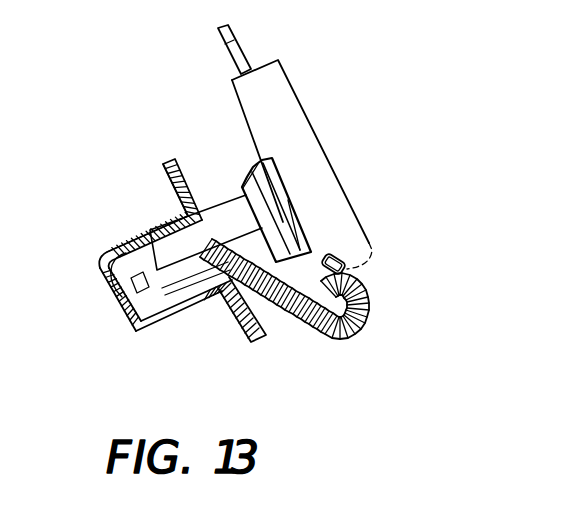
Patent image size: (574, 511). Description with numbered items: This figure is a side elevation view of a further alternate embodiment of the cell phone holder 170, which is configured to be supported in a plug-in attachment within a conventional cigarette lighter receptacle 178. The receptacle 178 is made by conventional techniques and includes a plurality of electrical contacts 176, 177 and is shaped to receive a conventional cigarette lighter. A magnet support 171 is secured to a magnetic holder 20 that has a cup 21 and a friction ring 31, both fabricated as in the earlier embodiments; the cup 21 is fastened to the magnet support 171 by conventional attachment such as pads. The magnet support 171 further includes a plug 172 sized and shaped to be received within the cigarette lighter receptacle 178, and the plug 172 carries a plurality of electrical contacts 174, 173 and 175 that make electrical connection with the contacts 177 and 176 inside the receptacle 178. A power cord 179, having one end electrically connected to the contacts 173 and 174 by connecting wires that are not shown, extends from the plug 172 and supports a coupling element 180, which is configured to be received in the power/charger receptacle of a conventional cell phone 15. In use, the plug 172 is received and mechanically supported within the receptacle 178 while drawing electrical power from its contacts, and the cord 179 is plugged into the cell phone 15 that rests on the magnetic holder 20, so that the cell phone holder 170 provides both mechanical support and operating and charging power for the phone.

The cell phone 15 is at (300, 93).
The magnetic holder 20 is at (236, 163).
The cup 21 is at (242, 188).
The friction ring 31 is at (287, 198).
The cell phone holder 170 is at (187, 160).
The magnet support 171 is at (215, 190).
The plug 172 is at (166, 275).
The electrical contact 173 is at (149, 293).
The electrical contact 174 is at (160, 240).
The electrical contact 175 is at (199, 302).
The electrical contact 176 is at (108, 278).
The electrical contact 177 is at (120, 301).
The cigarette lighter receptacle 178 is at (171, 197).
The power cord 179 is at (367, 307).
The coupling element 180 is at (338, 256).